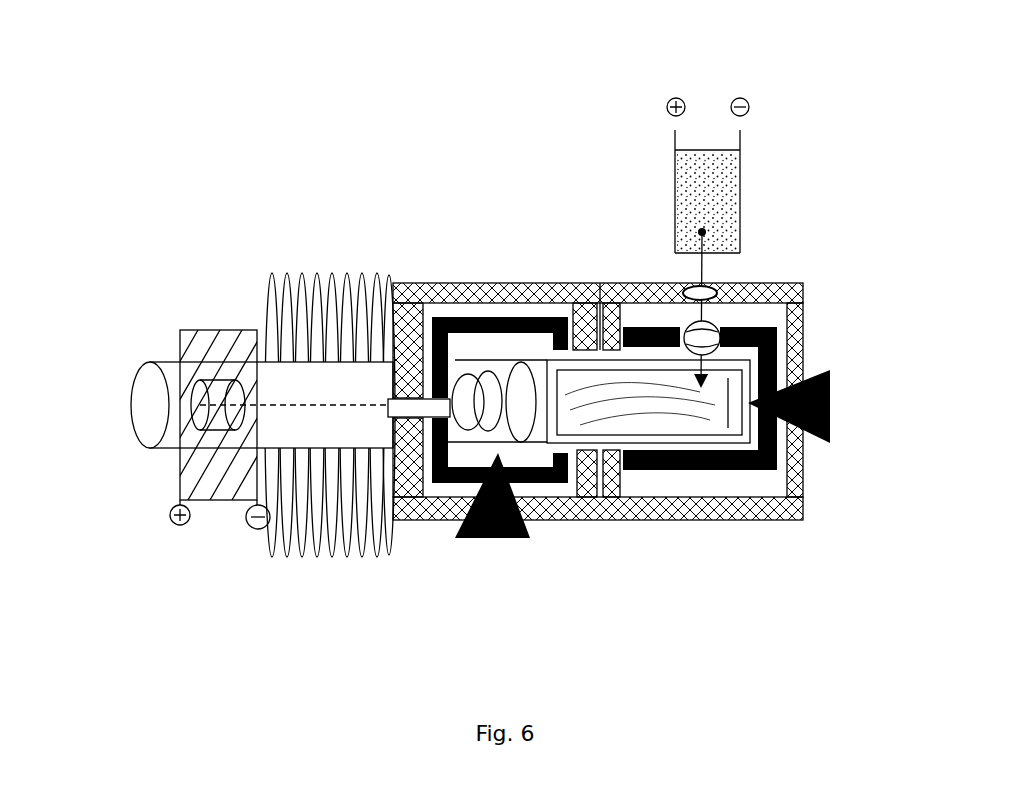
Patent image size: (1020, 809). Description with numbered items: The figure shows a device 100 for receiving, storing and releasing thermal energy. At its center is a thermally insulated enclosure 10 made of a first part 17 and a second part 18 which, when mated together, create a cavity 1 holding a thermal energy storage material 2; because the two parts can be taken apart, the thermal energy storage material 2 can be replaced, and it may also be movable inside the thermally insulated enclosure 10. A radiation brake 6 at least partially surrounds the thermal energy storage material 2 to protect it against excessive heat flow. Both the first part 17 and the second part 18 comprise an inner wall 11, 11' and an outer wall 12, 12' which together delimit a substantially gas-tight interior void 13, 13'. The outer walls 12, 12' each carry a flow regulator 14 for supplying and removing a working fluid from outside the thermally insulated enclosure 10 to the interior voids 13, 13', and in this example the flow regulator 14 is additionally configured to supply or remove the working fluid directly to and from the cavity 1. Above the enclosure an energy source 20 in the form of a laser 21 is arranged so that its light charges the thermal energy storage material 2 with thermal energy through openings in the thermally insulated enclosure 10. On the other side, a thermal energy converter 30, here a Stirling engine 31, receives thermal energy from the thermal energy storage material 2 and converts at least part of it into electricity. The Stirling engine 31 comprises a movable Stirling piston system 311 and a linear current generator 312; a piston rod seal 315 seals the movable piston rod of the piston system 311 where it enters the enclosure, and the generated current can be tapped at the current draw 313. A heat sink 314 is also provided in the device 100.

The device 100 is at (515, 138).
The cavity 1 is at (537, 435).
The thermal energy storage material 2 is at (692, 423).
The radiation brake 6 is at (648, 433).
The thermally insulated enclosure 10 is at (786, 270).
The inner wall 11 is at (638, 463).
The inner wall 11' is at (584, 537).
The outer wall 12 is at (644, 559).
The outer wall 12' is at (578, 274).
The interior void 13 is at (726, 476).
The interior void 13' is at (485, 353).
The flow regulator 14 is at (830, 395).
The first part 17 is at (800, 295).
The second part 18 is at (478, 283).
The energy source 20 is at (706, 113).
The laser 21 is at (723, 205).
The thermal energy converter 30 is at (263, 238).
The Stirling engine 31 is at (290, 445).
The movable Stirling piston system 311 is at (353, 403).
The linear current generator 312 is at (178, 332).
The current draw 313 is at (165, 522).
The heat sink 314 is at (330, 280).
The piston rod seal 315 is at (430, 418).